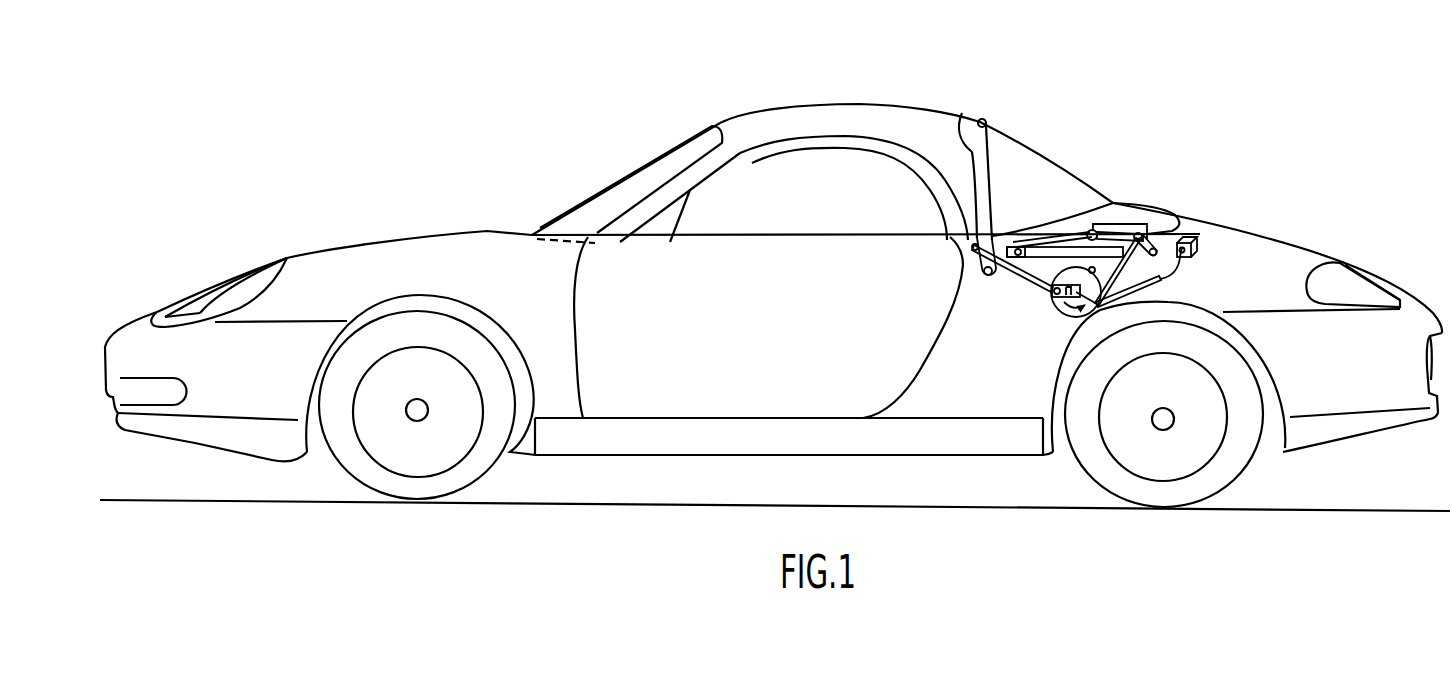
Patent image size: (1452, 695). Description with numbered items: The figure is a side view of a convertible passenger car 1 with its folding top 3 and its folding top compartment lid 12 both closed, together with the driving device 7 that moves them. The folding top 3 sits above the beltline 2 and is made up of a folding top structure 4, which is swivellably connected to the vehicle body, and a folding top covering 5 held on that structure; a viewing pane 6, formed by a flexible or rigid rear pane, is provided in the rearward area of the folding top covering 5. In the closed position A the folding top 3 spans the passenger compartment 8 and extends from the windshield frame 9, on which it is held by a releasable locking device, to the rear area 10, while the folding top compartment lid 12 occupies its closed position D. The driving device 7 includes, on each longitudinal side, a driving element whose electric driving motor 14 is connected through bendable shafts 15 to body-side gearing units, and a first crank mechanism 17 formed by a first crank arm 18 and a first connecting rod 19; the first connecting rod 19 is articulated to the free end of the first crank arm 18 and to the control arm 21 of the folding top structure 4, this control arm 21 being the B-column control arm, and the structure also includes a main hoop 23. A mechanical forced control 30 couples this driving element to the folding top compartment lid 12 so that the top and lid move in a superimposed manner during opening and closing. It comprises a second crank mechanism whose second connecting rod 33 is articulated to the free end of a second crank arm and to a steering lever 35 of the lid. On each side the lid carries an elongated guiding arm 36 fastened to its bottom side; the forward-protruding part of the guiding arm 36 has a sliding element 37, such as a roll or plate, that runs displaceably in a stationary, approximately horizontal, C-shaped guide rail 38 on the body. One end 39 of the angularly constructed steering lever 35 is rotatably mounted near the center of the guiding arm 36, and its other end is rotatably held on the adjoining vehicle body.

The convertible passenger car 1 is at (496, 225).
The beltline 2 is at (785, 238).
The folding top 3 is at (896, 100).
The folding top structure 4 is at (918, 184).
The folding top covering 5 is at (822, 110).
The viewing pane 6 is at (1023, 150).
The driving device 7 is at (1066, 321).
The passenger compartment 8 is at (780, 181).
The windshield frame 9 is at (714, 112).
The rear area 10 is at (1141, 200).
The folding top compartment lid 12 is at (1170, 220).
The electric driving motor 14 is at (1192, 247).
The bendable shafts 15 is at (1175, 278).
The first crank mechanism 17 is at (1035, 294).
The first crank arm 18 is at (1052, 308).
The first connecting rod 19 is at (968, 284).
The control arm 21 is at (946, 203).
The main hoop 23 is at (970, 150).
The mechanical forced control 30 is at (1111, 312).
The second connecting rod 33 is at (1135, 271).
The steering lever 35 is at (1117, 230).
The guiding arm 36 is at (1034, 225).
The sliding element 37 is at (1019, 247).
The guide rail 38 is at (1063, 256).
The end of the steering lever 39 is at (1092, 230).
The closed position A is at (781, 100).
The closed position of the folding top compartment lid D is at (1147, 200).